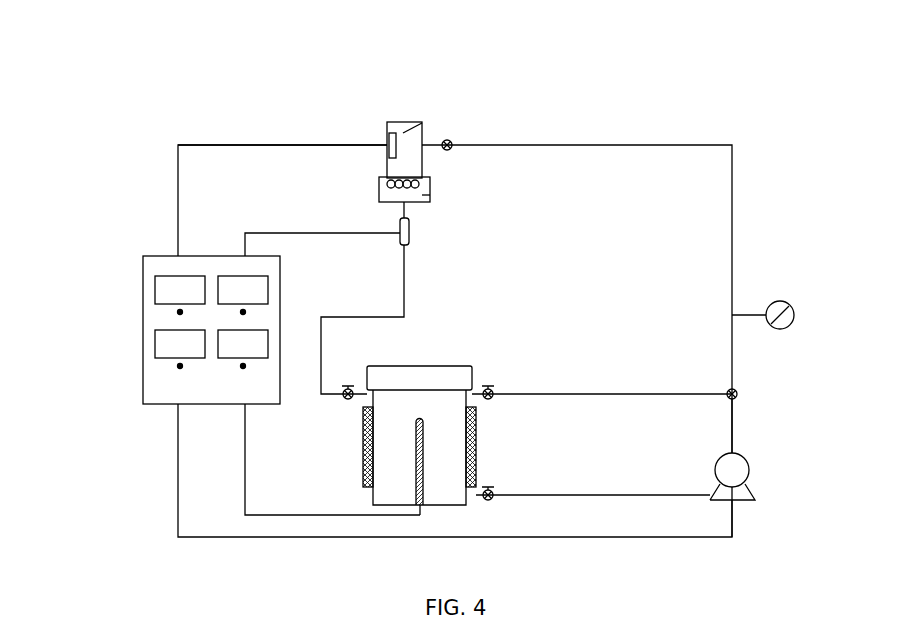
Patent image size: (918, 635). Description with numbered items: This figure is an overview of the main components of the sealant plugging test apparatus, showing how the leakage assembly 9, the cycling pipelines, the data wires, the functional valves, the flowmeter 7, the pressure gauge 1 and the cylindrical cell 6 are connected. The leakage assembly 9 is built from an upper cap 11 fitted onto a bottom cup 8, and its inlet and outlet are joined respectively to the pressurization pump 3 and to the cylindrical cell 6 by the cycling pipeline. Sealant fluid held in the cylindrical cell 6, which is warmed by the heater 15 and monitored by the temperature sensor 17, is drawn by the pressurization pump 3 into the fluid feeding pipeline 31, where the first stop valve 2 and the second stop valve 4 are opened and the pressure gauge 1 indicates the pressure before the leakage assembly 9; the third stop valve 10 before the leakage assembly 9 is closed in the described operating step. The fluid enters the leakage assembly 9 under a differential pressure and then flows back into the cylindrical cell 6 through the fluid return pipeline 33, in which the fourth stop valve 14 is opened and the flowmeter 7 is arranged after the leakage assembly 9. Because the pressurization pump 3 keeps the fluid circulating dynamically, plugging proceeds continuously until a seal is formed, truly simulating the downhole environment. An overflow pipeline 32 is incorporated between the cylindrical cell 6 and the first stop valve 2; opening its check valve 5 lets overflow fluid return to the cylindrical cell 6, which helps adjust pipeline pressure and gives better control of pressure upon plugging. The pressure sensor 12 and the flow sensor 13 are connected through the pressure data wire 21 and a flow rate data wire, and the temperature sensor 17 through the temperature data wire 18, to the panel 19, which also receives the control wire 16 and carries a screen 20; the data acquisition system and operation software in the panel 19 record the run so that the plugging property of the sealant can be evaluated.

The pressure gauge 1 is at (785, 302).
The first stop valve 2 is at (738, 393).
The pressurization pump 3 is at (745, 458).
The second stop valve 4 is at (493, 488).
The check valve 5 is at (494, 388).
The cylindrical cell 6 is at (419, 402).
The flowmeter 7 is at (410, 239).
The bottom cup 8 is at (427, 199).
The leakage assembly 9 is at (429, 179).
The third stop valve 10 is at (449, 141).
The upper cap 11 is at (423, 125).
The pressure sensor 12 is at (388, 134).
The flow sensor 13 is at (275, 232).
The fourth stop valve 14 is at (347, 389).
The heater 15 is at (363, 428).
The control wire 16 is at (735, 517).
The temperature sensor 17 is at (419, 502).
The temperature data wire 18 is at (244, 477).
The panel 19 is at (143, 300).
The screen 20 is at (180, 275).
The pressure data wire 21 is at (254, 145).
The fluid feeding pipeline 31 is at (733, 423).
The overflow pipeline 32 is at (635, 394).
The fluid return pipeline 33 is at (360, 316).